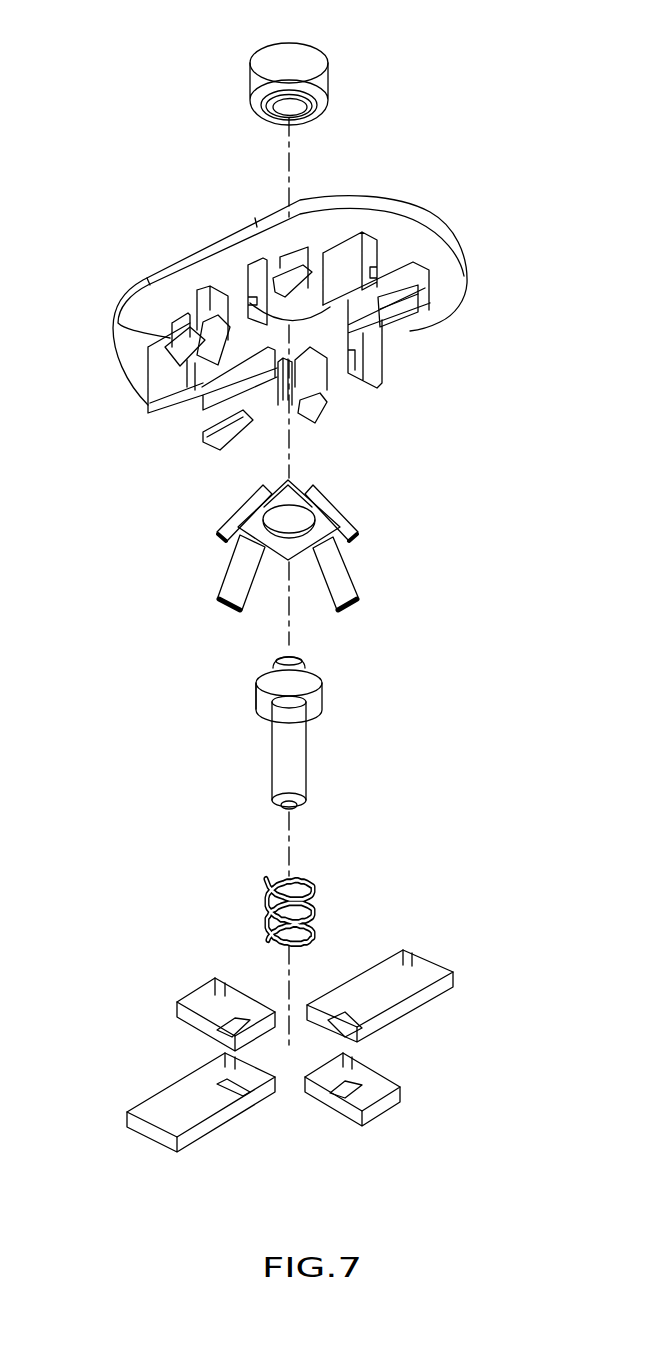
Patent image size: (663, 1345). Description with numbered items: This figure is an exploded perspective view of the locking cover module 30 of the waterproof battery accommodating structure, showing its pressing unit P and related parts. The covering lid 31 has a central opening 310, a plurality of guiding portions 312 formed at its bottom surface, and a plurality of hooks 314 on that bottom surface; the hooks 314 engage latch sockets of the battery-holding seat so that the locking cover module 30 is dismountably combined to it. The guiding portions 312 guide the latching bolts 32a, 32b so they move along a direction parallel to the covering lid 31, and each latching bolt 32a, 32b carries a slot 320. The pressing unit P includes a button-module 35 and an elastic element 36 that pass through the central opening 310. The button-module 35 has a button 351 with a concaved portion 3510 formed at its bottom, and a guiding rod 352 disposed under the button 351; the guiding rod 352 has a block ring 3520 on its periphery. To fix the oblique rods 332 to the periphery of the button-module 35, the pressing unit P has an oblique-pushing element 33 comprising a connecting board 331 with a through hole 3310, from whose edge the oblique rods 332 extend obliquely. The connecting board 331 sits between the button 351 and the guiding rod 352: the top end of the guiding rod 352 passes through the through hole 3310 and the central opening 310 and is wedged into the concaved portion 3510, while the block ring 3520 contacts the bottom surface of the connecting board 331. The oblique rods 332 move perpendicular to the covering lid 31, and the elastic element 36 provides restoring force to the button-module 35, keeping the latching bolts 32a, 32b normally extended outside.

The pressing unit P is at (336, 55).
The locking cover module 30 is at (388, 196).
The covering lid 31 is at (437, 222).
The central opening 310 is at (318, 318).
The guiding portion 312 is at (207, 305).
The hook 314 is at (293, 255).
The latching bolt 32a is at (200, 1020).
The latching bolt 32b is at (415, 997).
The slot 320 is at (230, 1094).
The oblique-pushing element 33 is at (228, 520).
The connecting board 331 is at (305, 486).
The through hole 3310 is at (300, 521).
The oblique rod 332 is at (242, 580).
The button-module 35 is at (269, 406).
The button 351 is at (260, 82).
The concaved portion 3510 is at (278, 107).
The guiding rod 352 is at (280, 757).
The block ring 3520 is at (318, 689).
The elastic element 36 is at (314, 906).